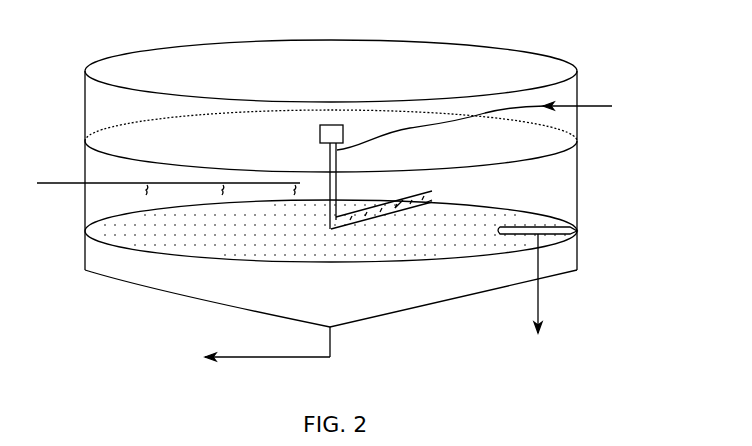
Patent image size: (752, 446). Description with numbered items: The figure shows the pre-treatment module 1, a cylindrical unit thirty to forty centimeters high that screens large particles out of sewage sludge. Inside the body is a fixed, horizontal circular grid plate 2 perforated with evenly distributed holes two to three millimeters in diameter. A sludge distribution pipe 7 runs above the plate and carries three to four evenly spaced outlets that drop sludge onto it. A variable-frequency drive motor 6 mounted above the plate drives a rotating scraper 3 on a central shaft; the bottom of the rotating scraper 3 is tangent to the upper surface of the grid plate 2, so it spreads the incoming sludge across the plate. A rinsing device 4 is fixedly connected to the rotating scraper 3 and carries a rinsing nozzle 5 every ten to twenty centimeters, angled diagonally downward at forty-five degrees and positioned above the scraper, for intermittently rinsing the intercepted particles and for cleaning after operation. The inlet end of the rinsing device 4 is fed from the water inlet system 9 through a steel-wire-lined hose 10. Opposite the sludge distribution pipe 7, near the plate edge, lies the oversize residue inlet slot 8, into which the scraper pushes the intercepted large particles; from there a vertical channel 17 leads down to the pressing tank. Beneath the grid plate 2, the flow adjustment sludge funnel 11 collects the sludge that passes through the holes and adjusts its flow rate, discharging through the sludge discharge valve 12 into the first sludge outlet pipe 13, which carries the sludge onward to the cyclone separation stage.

The pre-treatment module 1 is at (213, 143).
The grid plate 2 is at (480, 220).
The rotating scraper 3 is at (388, 215).
The rinsing device 4 is at (398, 204).
The rinsing nozzle 5 is at (428, 200).
The variable-frequency drive motor 6 is at (343, 130).
The sludge distribution pipe 7 is at (107, 186).
The oversize residue inlet slot 8 is at (541, 226).
The water inlet system 9 is at (590, 106).
The hose 10 is at (437, 130).
The flow adjustment sludge funnel 11 is at (223, 303).
The sludge discharge valve 12 is at (336, 332).
The first sludge outlet pipe 13 is at (270, 360).
The vertical channel 17 is at (540, 298).